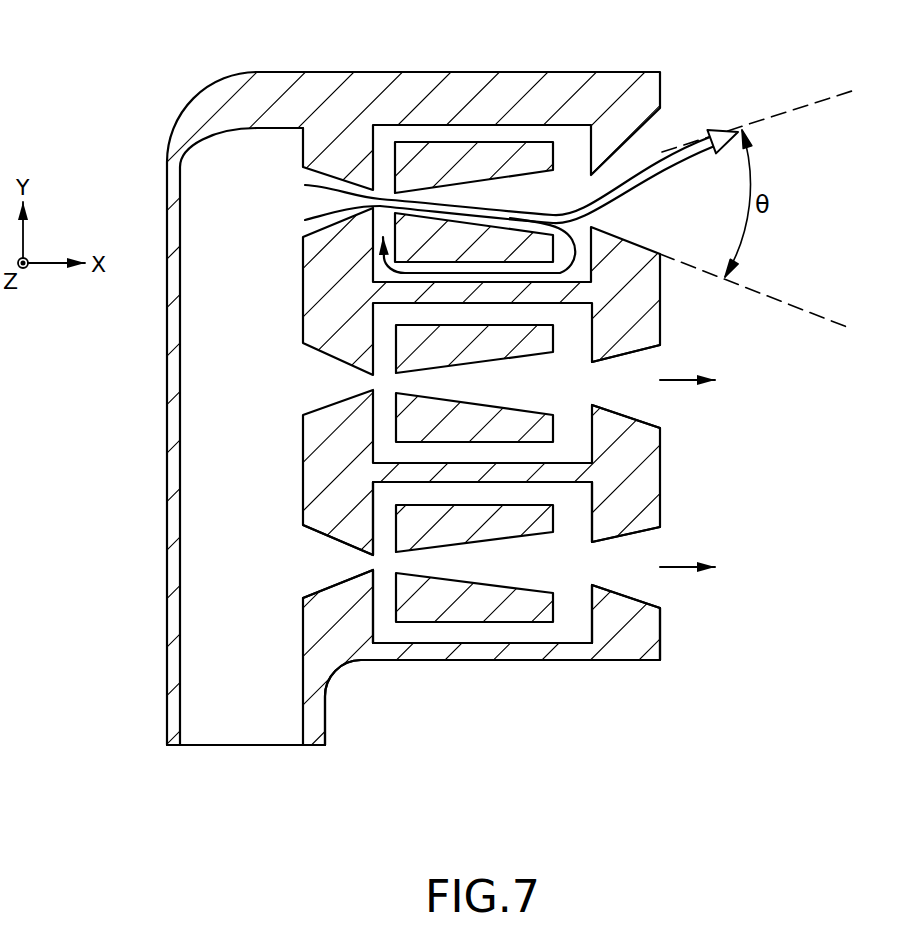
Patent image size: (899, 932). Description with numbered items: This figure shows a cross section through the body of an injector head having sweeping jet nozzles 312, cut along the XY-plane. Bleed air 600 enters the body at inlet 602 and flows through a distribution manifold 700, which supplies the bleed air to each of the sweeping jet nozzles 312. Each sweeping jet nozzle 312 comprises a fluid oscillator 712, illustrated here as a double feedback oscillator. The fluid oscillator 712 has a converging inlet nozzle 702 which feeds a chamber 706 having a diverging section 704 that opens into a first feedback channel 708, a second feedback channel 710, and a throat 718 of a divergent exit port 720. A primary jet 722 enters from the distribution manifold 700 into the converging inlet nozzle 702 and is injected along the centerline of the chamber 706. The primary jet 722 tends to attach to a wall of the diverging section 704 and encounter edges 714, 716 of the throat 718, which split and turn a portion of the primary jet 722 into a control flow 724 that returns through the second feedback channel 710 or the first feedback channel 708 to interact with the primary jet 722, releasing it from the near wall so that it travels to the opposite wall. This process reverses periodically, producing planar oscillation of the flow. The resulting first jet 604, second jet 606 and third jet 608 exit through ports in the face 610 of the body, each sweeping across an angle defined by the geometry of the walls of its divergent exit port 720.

The sweeping jet nozzle 312 is at (683, 85).
The bleed air 600 is at (243, 765).
The inlet 602 is at (325, 713).
The first jet 604 is at (680, 567).
The second jet 606 is at (680, 380).
The third jet 608 is at (693, 152).
The face 610 is at (660, 640).
The distribution manifold 700 is at (266, 489).
The converging inlet nozzle 702 is at (351, 575).
The diverging section 704 is at (549, 572).
The chamber 706 is at (385, 565).
The first feedback channel 708 is at (473, 493).
The second feedback channel 710 is at (450, 633).
The fluid oscillator 712 is at (503, 652).
The edge 714 is at (592, 405).
The edge 716 is at (583, 360).
The throat 718 is at (587, 567).
The divergent exit port 720 is at (659, 591).
The primary jet 722 is at (317, 204).
The control flow 724 is at (570, 232).